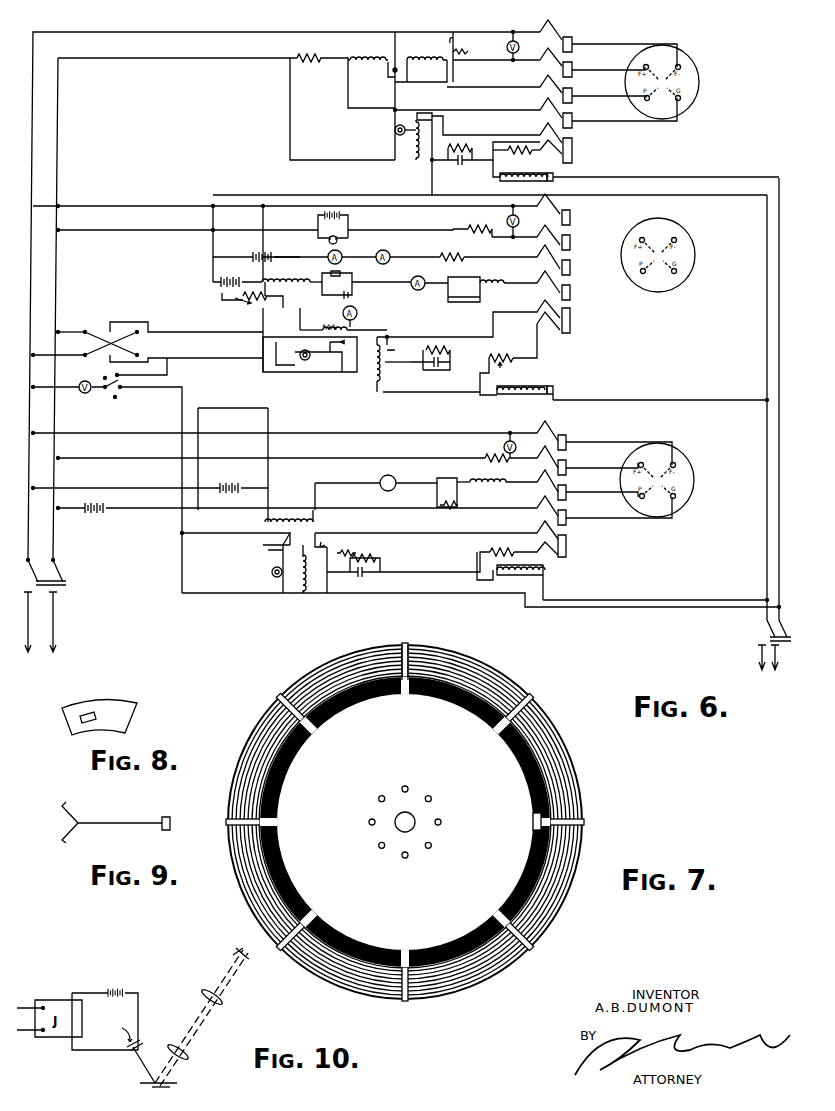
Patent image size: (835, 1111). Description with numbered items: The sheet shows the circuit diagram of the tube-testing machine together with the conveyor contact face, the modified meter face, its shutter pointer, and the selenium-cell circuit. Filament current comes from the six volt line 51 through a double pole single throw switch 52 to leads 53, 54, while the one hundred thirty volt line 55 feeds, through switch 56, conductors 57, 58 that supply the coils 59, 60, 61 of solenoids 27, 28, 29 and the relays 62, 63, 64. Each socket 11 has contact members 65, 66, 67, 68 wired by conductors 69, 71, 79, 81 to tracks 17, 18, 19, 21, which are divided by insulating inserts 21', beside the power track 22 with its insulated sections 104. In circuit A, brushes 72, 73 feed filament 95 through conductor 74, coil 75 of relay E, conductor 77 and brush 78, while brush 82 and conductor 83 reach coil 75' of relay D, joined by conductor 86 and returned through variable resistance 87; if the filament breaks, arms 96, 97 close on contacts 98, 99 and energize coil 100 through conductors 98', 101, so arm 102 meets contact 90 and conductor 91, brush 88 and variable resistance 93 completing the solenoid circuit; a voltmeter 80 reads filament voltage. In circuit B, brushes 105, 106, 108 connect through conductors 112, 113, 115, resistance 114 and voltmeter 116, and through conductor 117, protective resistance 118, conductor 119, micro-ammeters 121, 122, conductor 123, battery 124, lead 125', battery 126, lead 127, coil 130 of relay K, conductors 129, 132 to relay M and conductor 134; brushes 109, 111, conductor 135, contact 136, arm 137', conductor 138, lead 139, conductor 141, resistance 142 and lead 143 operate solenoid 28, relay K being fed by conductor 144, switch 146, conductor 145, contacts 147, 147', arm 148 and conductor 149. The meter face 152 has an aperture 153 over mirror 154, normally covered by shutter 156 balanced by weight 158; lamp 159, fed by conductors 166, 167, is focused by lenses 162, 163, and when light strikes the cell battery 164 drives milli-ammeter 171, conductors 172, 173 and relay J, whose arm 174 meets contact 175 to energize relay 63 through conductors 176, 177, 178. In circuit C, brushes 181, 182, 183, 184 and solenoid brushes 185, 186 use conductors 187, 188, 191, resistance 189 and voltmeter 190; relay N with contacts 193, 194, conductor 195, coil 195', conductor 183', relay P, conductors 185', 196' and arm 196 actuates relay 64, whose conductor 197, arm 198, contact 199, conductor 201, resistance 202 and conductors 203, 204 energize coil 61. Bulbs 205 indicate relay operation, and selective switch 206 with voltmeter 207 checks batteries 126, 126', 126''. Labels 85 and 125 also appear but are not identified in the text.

In FIG. 6, the socket 11 is at (693, 236).
In FIG. 6, the contact ring 17 is at (571, 443).
In FIG. 7, the contact ring 17 is at (556, 764).
In FIG. 6, the contact ring 18 is at (571, 469).
In FIG. 7, the contact ring 18 is at (560, 775).
In FIG. 6, the contact ring 19 is at (571, 493).
In FIG. 7, the contact ring 19 is at (566, 790).
In FIG. 6, the contact ring 21 is at (574, 319).
In FIG. 7, the contact ring 21 is at (427, 822).
In FIG. 6, the power or solenoid contact track 22 is at (571, 546).
In FIG. 7, the power or solenoid contact track 22 is at (536, 815).
In FIG. 7, the transverse insulating insert 21' is at (405, 653).
In FIG. 6, the solenoid 27 is at (556, 177).
In FIG. 6, the solenoid 28 is at (555, 390).
In FIG. 6, the solenoid 29 is at (548, 572).
In FIG. 6, the 6 volt D. C. line 51 is at (60, 652).
In FIG. 6, the double pole single throw switch 52 is at (62, 569).
In FIG. 6, the lead 53 is at (60, 107).
In FIG. 6, the lead 54 is at (35, 133).
In FIG. 6, the 130 volt D. C. line 55 is at (760, 658).
In FIG. 6, the double pole single throw switch 56 is at (765, 636).
In FIG. 6, the conductor 57 is at (777, 440).
In FIG. 6, the conductor 58 is at (765, 333).
In FIG. 6, the coil 59 is at (554, 166).
In FIG. 6, the coil 60 is at (540, 385).
In FIG. 6, the coil 61 is at (525, 577).
In FIG. 6, the power-control relay 62 is at (430, 162).
In FIG. 6, the relay 63 is at (386, 388).
In FIG. 6, the power relay 64 is at (318, 596).
In FIG. 6, the contact member 65 is at (669, 57).
In FIG. 6, the contact member 66 is at (651, 57).
In FIG. 6, the contact member 67 is at (660, 94).
In FIG. 6, the grid contact 68 is at (676, 102).
In FIG. 6, the conductor 69 is at (644, 40).
In FIG. 6, the conductor 71 is at (630, 69).
In FIG. 6, the brush 72 is at (557, 28).
In FIG. 6, the brush 73 is at (551, 54).
In FIG. 6, the conductor 74 is at (492, 61).
In FIG. 6, the coil 75 is at (421, 62).
In FIG. 6, the coil 75' is at (368, 56).
In FIG. 6, the conductor 77 is at (508, 93).
In FIG. 6, the brush 78 is at (553, 96).
In FIG. 6, the conductor 79 is at (616, 96).
In FIG. 6, the voltmeter 80 is at (520, 46).
In FIG. 6, the conductor 81 is at (641, 122).
In FIG. 6, the brush 82 is at (534, 121).
In FIG. 6, the conductor 83 is at (512, 113).
In FIG. 6, the fuse 85 is at (539, 138).
In FIG. 6, the conductor 86 is at (393, 78).
In FIG. 6, the variable resistance 87 is at (306, 62).
In FIG. 6, the brush 88 is at (551, 147).
In FIG. 6, the contact 90 is at (430, 113).
In FIG. 6, the conductor 91 is at (523, 136).
In FIG. 6, the variable resistance 93 is at (510, 147).
In FIG. 6, the filament 95 is at (655, 466).
In FIG. 6, the movable arm 96 is at (470, 53).
In FIG. 6, the movable arm 97 is at (393, 40).
In FIG. 6, the contact 98 is at (460, 48).
In FIG. 6, the conductor 98' is at (382, 121).
In FIG. 6, the contact 99 is at (401, 37).
In FIG. 6, the coil 100 is at (412, 145).
In FIG. 6, the conductor 101 is at (338, 150).
In FIG. 6, the arm 102 is at (440, 118).
In FIG. 7, the insulated section 104 is at (457, 697).
In FIG. 6, the brush 105 is at (551, 221).
In FIG. 6, the brush 106 is at (551, 246).
In FIG. 6, the brush 108 is at (551, 297).
In FIG. 6, the brush 109 is at (540, 289).
In FIG. 6, the brush 111 is at (549, 325).
In FIG. 6, the conductor 112 is at (502, 210).
In FIG. 6, the conductor 113 is at (525, 239).
In FIG. 6, the resistance 114 is at (485, 240).
In FIG. 6, the conductor 115 is at (430, 234).
In FIG. 6, the volt meter 116 is at (525, 221).
In FIG. 6, the conductor 117 is at (508, 264).
In FIG. 6, the protective resistance 118 is at (464, 256).
In FIG. 6, the conductor 119 is at (432, 256).
In FIG. 6, the micro-ammeter 121 is at (408, 263).
In FIG. 6, the micro-ammeter 122 is at (347, 255).
In FIG. 6, the conductor 123 is at (330, 263).
In FIG. 6, the battery 124 is at (310, 255).
In FIG. 6, the conductor 125 is at (188, 244).
In FIG. 6, the lead 125' is at (270, 259).
In FIG. 6, the battery 126 is at (237, 277).
In FIG. 6, the battery 126' is at (150, 482).
In FIG. 6, the battery 126'' is at (308, 503).
In FIG. 6, the lead 127 is at (259, 283).
In FIG. 6, the conductor 129 is at (348, 298).
In FIG. 6, the coil 130 is at (278, 281).
In FIG. 6, the conductor 132 is at (453, 284).
In FIG. 6, the conductor 134 is at (527, 287).
In FIG. 6, the conductor 135 is at (496, 325).
In FIG. 6, the contact 136 is at (390, 333).
In FIG. 6, the arm 137' is at (424, 353).
In FIG. 6, the conductor 138 is at (432, 375).
In FIG. 6, the lead 139 is at (681, 403).
In FIG. 6, the conductor 141 is at (475, 378).
In FIG. 6, the resistance 142 is at (495, 374).
In FIG. 6, the lead 143 is at (537, 347).
In FIG. 6, the conductor 144 is at (77, 329).
In FIG. 6, the conductor 145 is at (164, 334).
In FIG. 6, the switch 146 is at (121, 325).
In FIG. 6, the contact 147 is at (266, 295).
In FIG. 6, the contact 147' is at (246, 306).
In FIG. 6, the movable arm 148 is at (283, 310).
In FIG. 6, the conductor 149 is at (300, 372).
In FIG. 8, the black cardboard face 152 is at (136, 716).
In FIG. 10, the black cardboard face 152 is at (170, 1083).
In FIG. 8, the aperture 153 is at (86, 712).
In FIG. 10, the mirror 154 is at (163, 1090).
In FIG. 9, the shutter 156 is at (170, 823).
In FIG. 9, the miniature weight 158 is at (64, 805).
In FIG. 6, the lamp bulb 159 is at (340, 240).
In FIG. 10, the lamp bulb 159 is at (242, 951).
In FIG. 10, the lens 162 is at (226, 996).
In FIG. 10, the lens 163 is at (199, 1045).
In FIG. 6, the battery 164 is at (350, 298).
In FIG. 10, the battery 164 is at (113, 993).
In FIG. 6, the conductor 166 is at (350, 228).
In FIG. 6, the conductor 167 is at (316, 224).
In FIG. 9, the conductor 167 is at (65, 842).
In FIG. 6, the milli-ammeter 171 is at (357, 313).
In FIG. 6, the conductor 172 is at (352, 332).
In FIG. 6, the conductor 173 is at (320, 332).
In FIG. 6, the movable arm 174 is at (338, 372).
In FIG. 6, the contact 175 is at (348, 343).
In FIG. 6, the conductor 176 is at (374, 382).
In FIG. 6, the conductor 177 is at (185, 340).
In FIG. 6, the conductor 178 is at (288, 327).
In FIG. 6, the brush 181 is at (548, 444).
In FIG. 6, the brush 182 is at (545, 469).
In FIG. 6, the brush 183 is at (532, 487).
In FIG. 6, the conductor 183' is at (483, 493).
In FIG. 6, the brush 184 is at (546, 521).
In FIG. 6, the solenoid brush 185 is at (535, 532).
In FIG. 6, the conductor 185' is at (376, 492).
In FIG. 6, the solenoid brush 186 is at (535, 548).
In FIG. 6, the conductor 187 is at (432, 432).
In FIG. 6, the conductor 188 is at (408, 457).
In FIG. 6, the resistance 189 is at (511, 456).
In FIG. 6, the voltmeter 190 is at (517, 449).
In FIG. 6, the conductor 191 is at (515, 462).
In FIG. 6, the contact 193 is at (263, 540).
In FIG. 6, the contact 194 is at (301, 536).
In FIG. 6, the conductor 195 is at (236, 533).
In FIG. 6, the coil 195' is at (289, 511).
In FIG. 6, the arm 196 is at (276, 569).
In FIG. 6, the conductor 196' is at (233, 458).
In FIG. 6, the conductor 197 is at (252, 594).
In FIG. 6, the arm 198 is at (333, 552).
In FIG. 6, the contact 199 is at (328, 541).
In FIG. 6, the conductor 201 is at (421, 533).
In FIG. 6, the resistance 202 is at (505, 545).
In FIG. 6, the conductor 203 is at (640, 591).
In FIG. 6, the conductor 204 is at (607, 612).
In FIG. 6, the small bulb 205 is at (272, 572).
In FIG. 6, the selective switch 206 is at (141, 383).
In FIG. 6, the voltmeter 207 is at (83, 394).